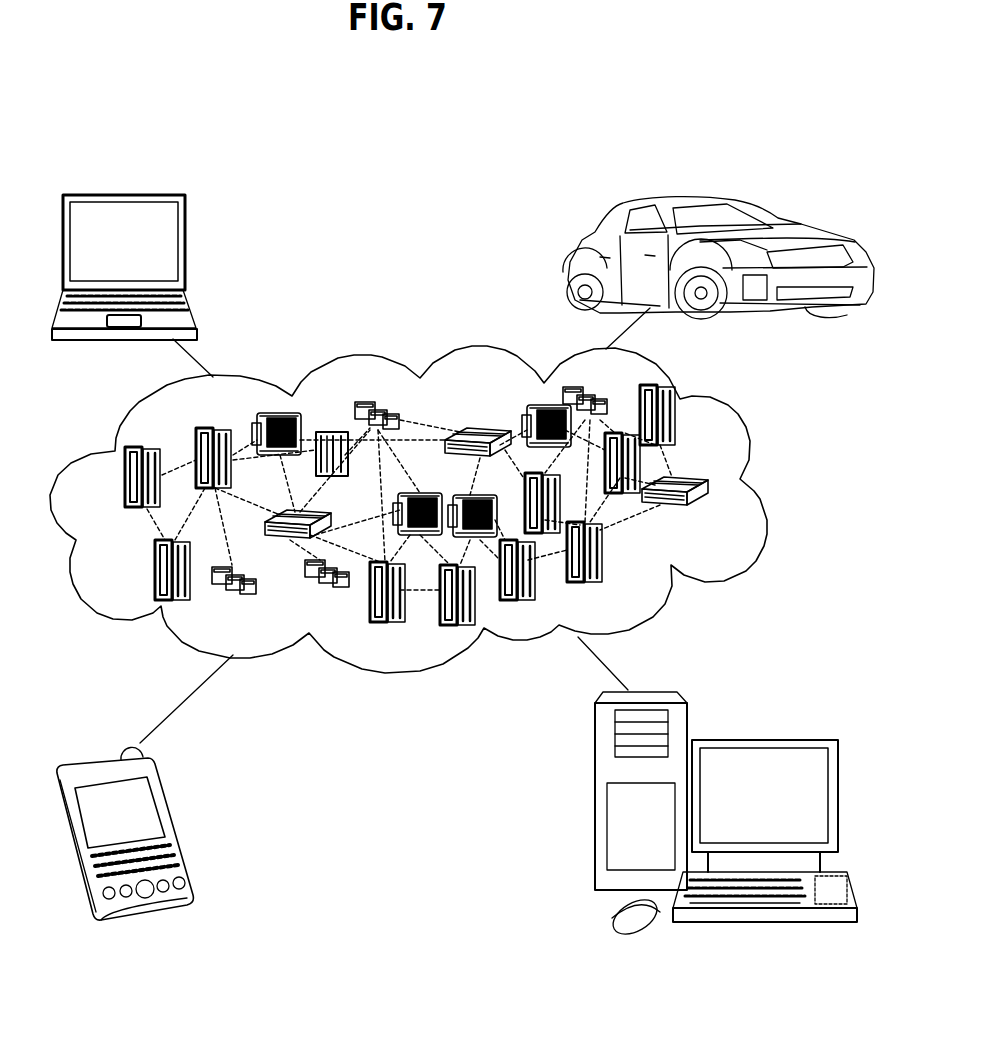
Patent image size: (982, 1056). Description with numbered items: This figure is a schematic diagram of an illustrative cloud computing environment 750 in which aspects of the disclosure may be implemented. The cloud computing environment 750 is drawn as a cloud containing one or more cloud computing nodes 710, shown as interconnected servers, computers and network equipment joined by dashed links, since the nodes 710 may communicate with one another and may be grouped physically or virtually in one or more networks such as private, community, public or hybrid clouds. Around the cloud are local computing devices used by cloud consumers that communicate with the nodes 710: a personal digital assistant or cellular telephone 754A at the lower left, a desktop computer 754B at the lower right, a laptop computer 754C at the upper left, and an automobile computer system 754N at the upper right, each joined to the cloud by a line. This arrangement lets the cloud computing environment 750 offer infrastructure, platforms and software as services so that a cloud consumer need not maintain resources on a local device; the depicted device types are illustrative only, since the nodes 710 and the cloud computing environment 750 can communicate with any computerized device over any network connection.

The laptop computer 754C is at (186, 249).
The automobile computer system 754N is at (567, 263).
The cloud computing environment 750 is at (765, 487).
The cloud computing nodes 710 is at (714, 514).
The personal digital assistant (PDA) or cellular telephone 754A is at (180, 823).
The desktop computer 754B is at (762, 739).